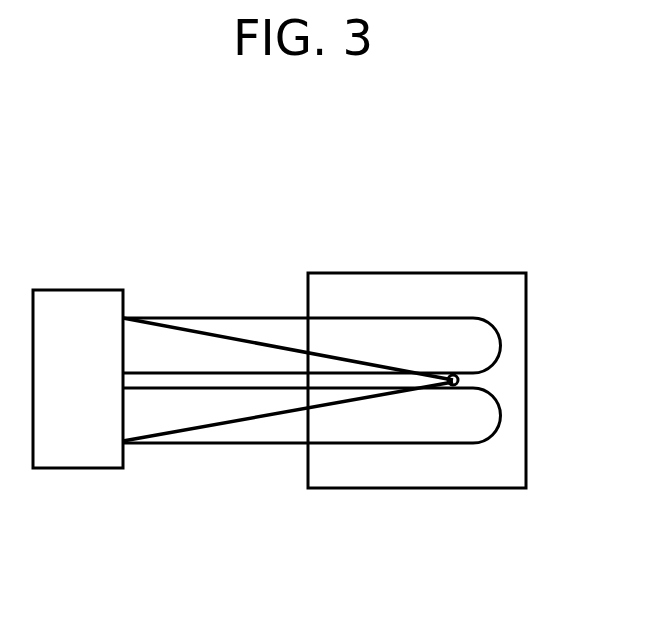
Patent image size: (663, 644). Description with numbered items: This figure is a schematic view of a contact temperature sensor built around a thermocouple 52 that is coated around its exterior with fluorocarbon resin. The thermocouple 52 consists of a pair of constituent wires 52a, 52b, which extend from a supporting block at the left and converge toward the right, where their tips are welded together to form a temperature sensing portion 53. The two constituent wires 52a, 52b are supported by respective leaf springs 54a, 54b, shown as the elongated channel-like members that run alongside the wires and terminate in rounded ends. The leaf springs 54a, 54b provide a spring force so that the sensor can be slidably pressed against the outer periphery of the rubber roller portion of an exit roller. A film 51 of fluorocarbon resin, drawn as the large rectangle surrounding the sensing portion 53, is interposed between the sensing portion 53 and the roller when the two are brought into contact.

The film of fluorocarbon resin 51 is at (377, 286).
The thermocouple 52 is at (253, 196).
The constituent wire 52a is at (200, 330).
The constituent wire 52b is at (193, 436).
The temperature sensing portion 53 is at (459, 380).
The leaf spring 54a is at (270, 330).
The leaf spring 54b is at (272, 445).